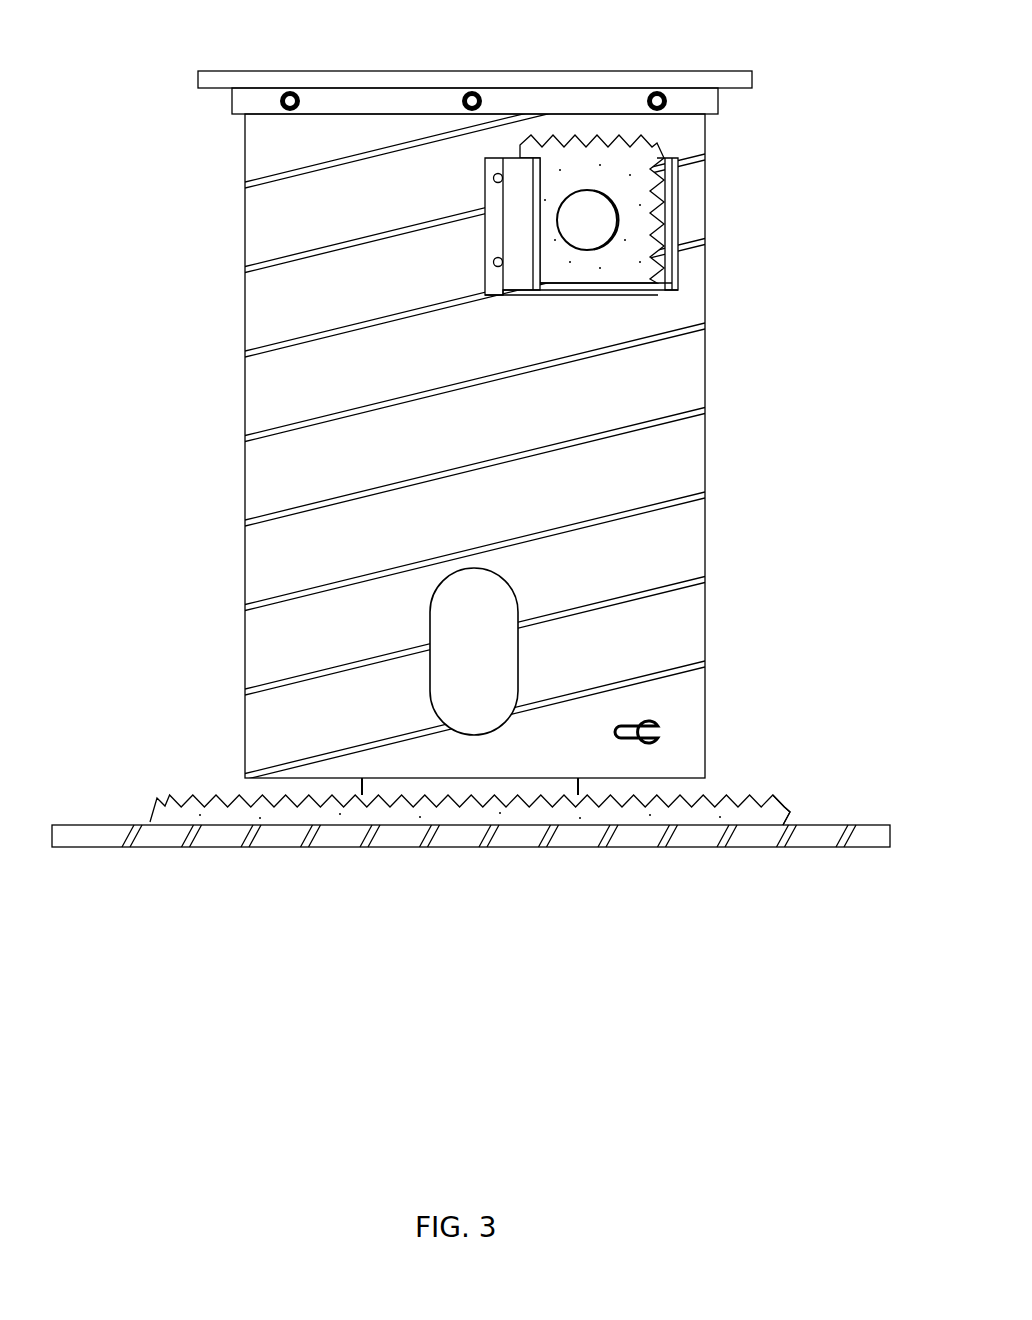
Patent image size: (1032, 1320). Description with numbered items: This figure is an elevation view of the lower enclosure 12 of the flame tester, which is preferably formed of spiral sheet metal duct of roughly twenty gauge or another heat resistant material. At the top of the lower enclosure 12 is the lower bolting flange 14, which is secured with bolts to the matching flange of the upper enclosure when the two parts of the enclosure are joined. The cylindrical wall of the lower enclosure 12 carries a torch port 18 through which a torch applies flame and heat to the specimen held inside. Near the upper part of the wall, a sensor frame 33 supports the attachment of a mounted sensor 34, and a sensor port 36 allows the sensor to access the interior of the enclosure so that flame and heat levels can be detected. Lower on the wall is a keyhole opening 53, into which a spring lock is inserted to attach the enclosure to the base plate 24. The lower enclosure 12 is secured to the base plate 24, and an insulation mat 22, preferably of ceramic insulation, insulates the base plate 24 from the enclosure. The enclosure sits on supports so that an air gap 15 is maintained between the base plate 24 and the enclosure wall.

The lower enclosure 12 is at (278, 237).
The lower bolting flange 14 is at (205, 89).
The air gap 15 is at (242, 784).
The torch port 18 is at (443, 608).
The insulation mat 22 is at (760, 797).
The base plate 24 is at (690, 835).
The sensor frame 33 is at (682, 163).
The mounted sensor 34 is at (568, 141).
The sensor port 36 is at (613, 223).
The keyhole opening 53 is at (645, 733).